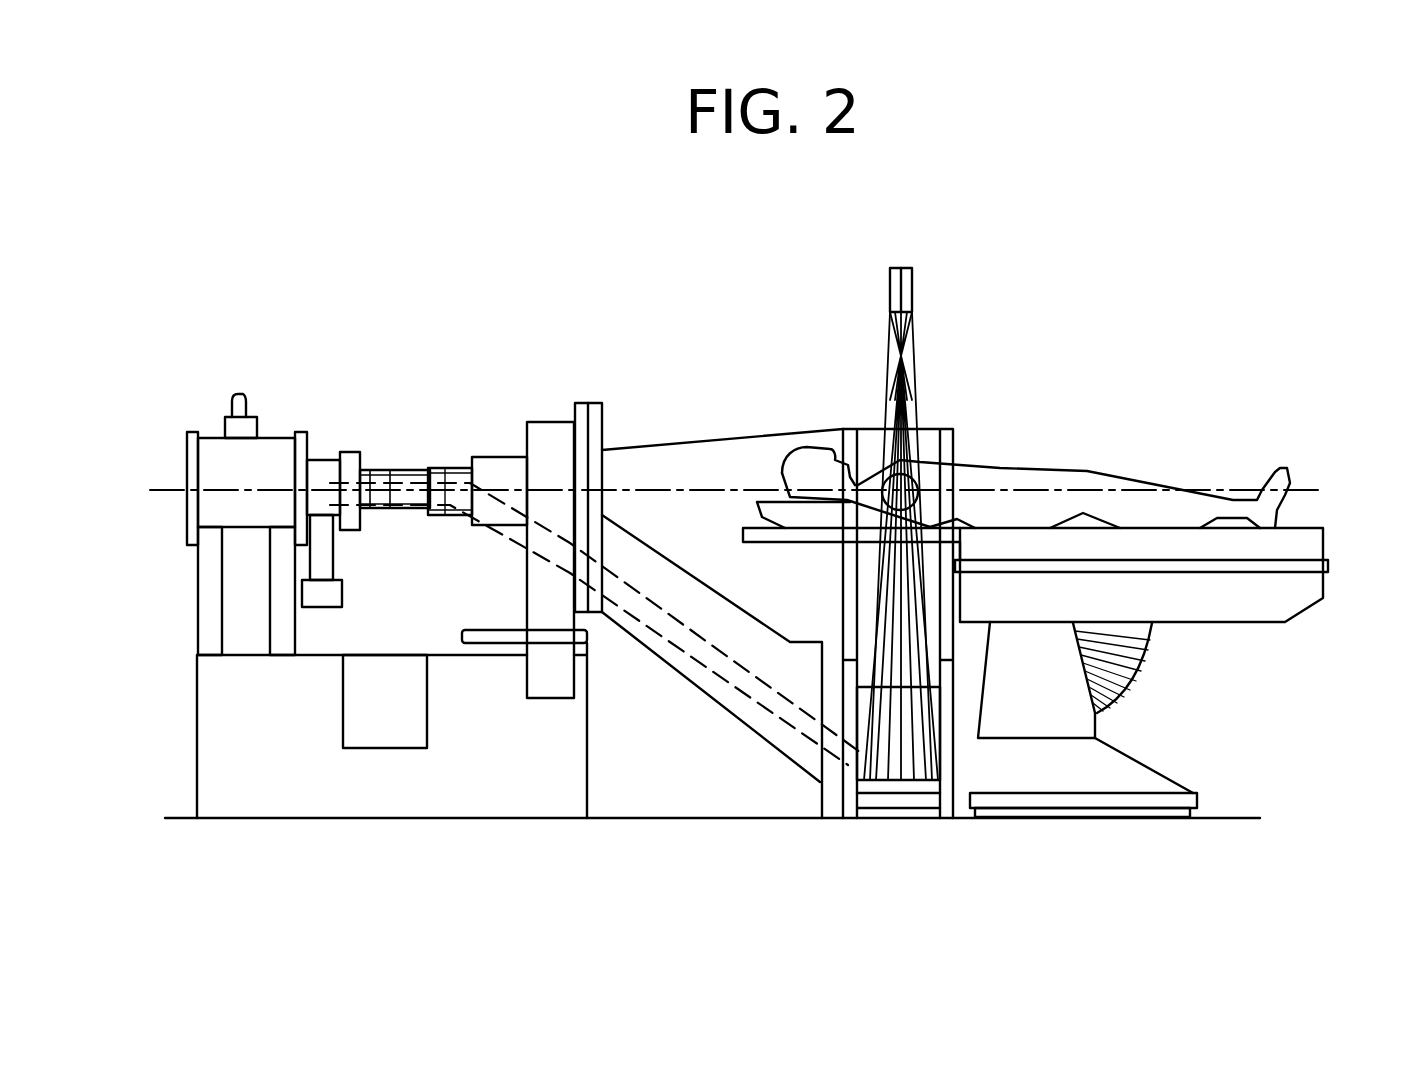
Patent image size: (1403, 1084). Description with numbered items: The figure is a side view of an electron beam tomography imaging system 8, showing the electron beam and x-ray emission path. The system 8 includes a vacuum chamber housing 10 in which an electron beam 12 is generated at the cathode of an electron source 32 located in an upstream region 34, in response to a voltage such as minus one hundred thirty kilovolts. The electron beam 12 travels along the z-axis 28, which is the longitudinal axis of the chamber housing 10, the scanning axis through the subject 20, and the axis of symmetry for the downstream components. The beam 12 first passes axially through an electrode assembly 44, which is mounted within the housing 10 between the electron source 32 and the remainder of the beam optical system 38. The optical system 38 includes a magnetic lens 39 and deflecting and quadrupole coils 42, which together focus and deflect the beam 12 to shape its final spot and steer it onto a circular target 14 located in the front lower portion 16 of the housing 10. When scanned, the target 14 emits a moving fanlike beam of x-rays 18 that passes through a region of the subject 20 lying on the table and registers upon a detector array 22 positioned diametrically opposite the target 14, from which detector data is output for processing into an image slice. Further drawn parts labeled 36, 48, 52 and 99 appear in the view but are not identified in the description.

The imaging system 8 is at (545, 300).
The vacuum chamber housing 10 is at (656, 393).
The electron beam 12 is at (412, 526).
The circular target 14 is at (870, 782).
The front lower portion 16 is at (940, 800).
The fanlike beam of x-rays 18 is at (888, 600).
The subject 20 is at (940, 487).
The detector array 22 is at (913, 288).
The z-axis 28 is at (162, 497).
The electron source 32 is at (292, 478).
The upstream region 34 is at (252, 370).
The mounting block 36 is at (522, 398).
The beam optical system 38 is at (461, 345).
The magnetic lens 39 is at (462, 520).
The coils 42 is at (495, 457).
The electrode assembly 44 is at (380, 460).
The collimator 48 is at (437, 520).
The shaft section 52 is at (410, 470).
The control unit 99 is at (343, 715).